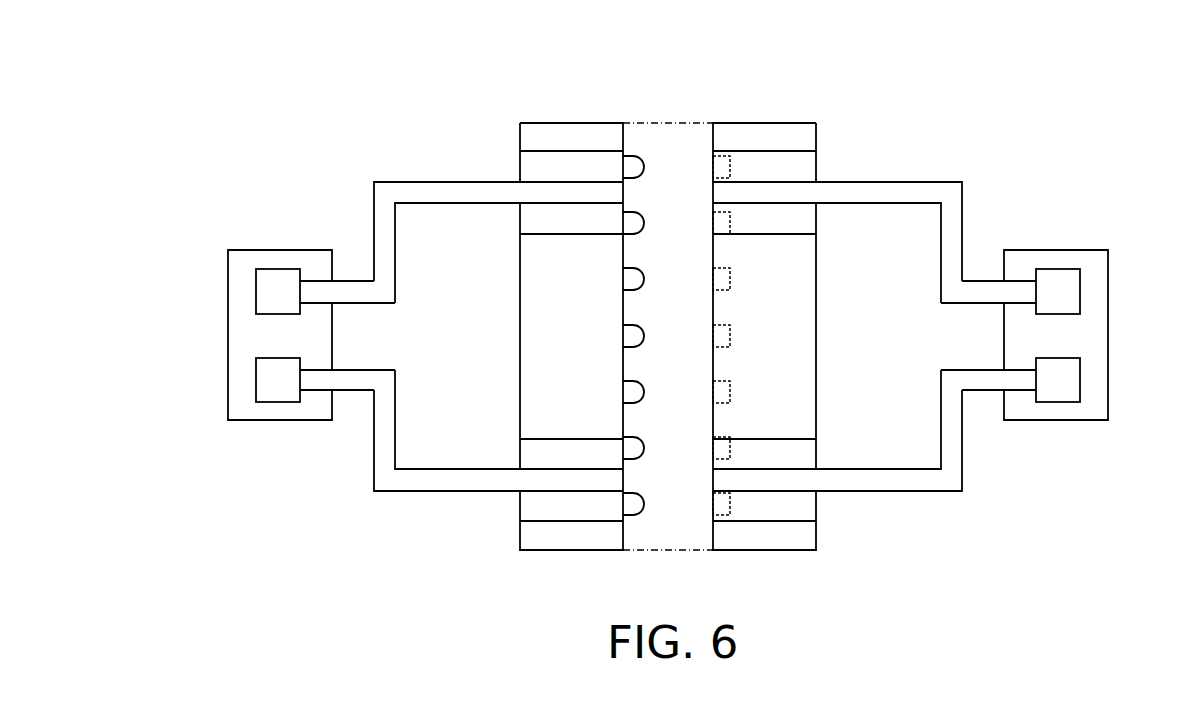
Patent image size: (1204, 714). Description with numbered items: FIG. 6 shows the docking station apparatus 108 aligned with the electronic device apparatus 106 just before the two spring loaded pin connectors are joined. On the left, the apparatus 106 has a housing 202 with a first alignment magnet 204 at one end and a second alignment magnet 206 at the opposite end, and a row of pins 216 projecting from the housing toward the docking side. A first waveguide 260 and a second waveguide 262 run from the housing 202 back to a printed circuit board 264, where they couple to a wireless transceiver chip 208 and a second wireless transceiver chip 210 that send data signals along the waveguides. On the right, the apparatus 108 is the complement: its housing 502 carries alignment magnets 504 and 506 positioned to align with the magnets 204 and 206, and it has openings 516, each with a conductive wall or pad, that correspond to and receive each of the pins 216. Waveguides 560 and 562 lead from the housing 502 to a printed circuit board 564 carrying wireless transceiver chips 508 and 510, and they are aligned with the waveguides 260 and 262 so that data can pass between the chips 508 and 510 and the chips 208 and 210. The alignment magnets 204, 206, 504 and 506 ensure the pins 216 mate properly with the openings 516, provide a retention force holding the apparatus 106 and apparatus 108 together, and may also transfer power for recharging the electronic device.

The apparatus 106 is at (560, 108).
The apparatus 108 is at (770, 106).
The housing 202 is at (530, 130).
The first alignment magnet 204 is at (535, 165).
The second alignment magnet 206 is at (540, 500).
The wireless transceiver chip 208 is at (278, 268).
The second wireless transceiver chip 210 is at (277, 403).
The pins 216 is at (650, 580).
The first waveguide 260 is at (383, 180).
The second waveguide 262 is at (383, 493).
The printed circuit board 264 is at (228, 333).
The housing 502 is at (807, 130).
The alignment magnet 504 is at (802, 165).
The alignment magnet 506 is at (797, 500).
The wireless transceiver chip 508 is at (1058, 268).
The wireless transceiver chip 510 is at (1058, 403).
The openings 516 is at (712, 508).
The waveguide 560 is at (953, 180).
The waveguide 562 is at (953, 493).
The printed circuit board 564 is at (1108, 333).